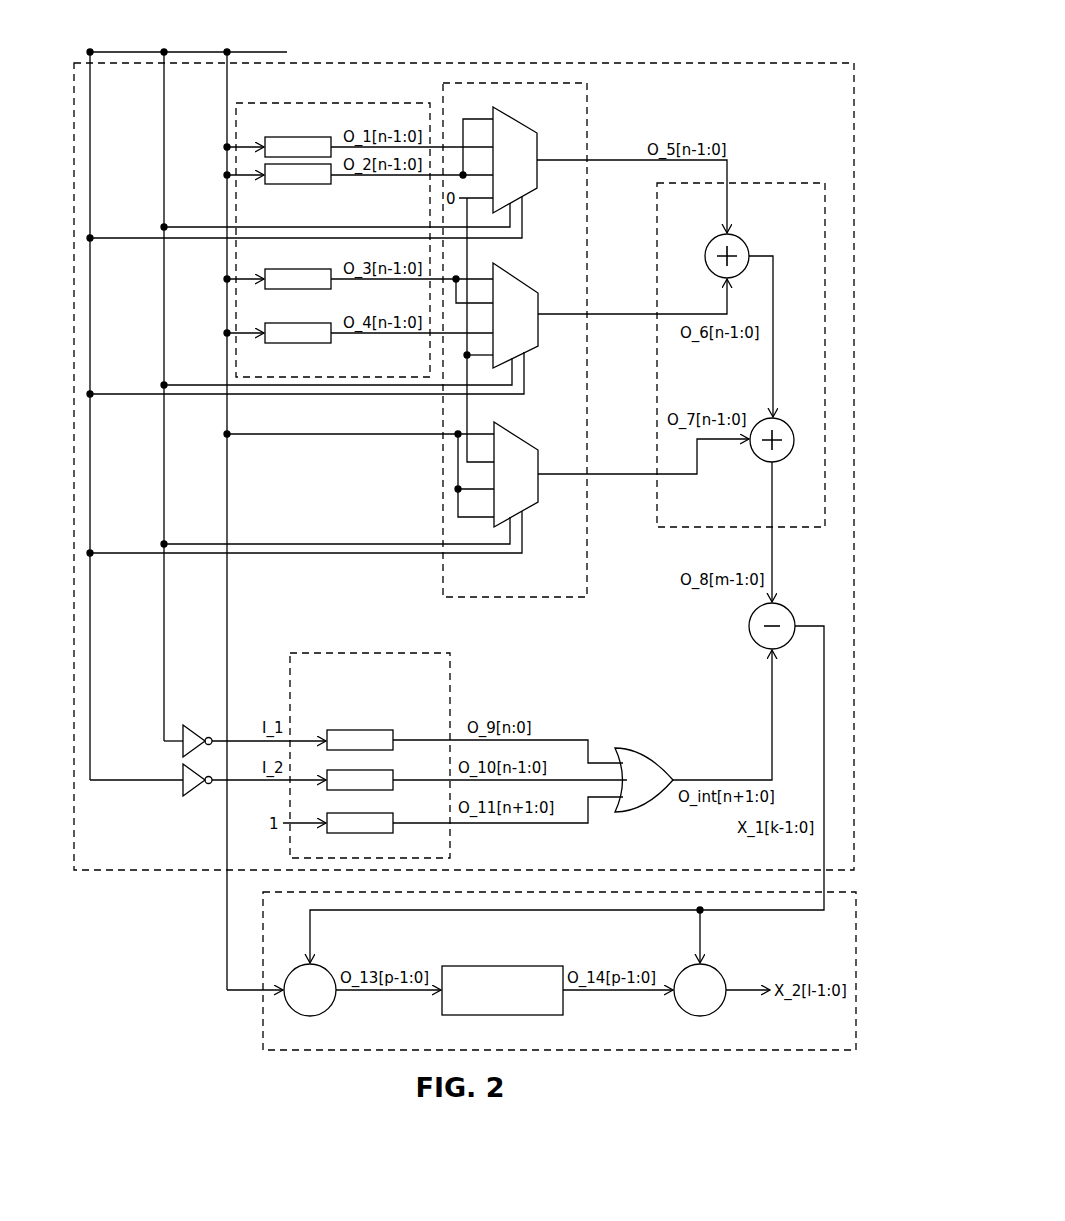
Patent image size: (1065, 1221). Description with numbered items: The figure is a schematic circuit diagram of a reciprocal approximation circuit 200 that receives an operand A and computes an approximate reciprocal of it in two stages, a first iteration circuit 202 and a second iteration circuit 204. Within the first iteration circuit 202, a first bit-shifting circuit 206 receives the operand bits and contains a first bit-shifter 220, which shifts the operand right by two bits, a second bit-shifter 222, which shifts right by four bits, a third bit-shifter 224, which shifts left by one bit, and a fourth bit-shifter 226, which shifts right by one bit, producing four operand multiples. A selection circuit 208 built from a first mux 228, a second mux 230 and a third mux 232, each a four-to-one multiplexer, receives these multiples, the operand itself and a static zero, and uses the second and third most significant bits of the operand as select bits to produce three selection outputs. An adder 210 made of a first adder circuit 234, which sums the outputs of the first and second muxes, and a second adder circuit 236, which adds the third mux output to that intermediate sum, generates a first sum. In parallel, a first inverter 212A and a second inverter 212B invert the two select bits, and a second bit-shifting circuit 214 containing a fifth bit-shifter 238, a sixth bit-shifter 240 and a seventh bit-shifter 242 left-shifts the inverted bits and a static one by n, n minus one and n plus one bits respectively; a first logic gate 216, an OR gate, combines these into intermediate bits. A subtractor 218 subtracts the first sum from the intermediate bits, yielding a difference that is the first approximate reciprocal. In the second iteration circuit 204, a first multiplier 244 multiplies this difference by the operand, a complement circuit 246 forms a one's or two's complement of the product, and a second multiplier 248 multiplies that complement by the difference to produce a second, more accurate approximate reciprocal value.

The reciprocal approximation circuit 200 is at (130, 34).
The first iteration circuit 202 is at (838, 64).
The second iteration circuit 204 is at (255, 1025).
The first bit-shifting circuit 206 is at (322, 104).
The selection circuit 208 is at (590, 142).
The adder 210 is at (754, 182).
The first inverter 212A is at (200, 716).
The second inverter 212B is at (192, 797).
The second bit-shifting circuit 214 is at (453, 701).
The first logic gate 216 is at (662, 758).
The subtractor 218 is at (793, 612).
The first bit-shifter 220 is at (284, 137).
The second bit-shifter 222 is at (290, 184).
The third bit-shifter 224 is at (296, 269).
The fourth bit-shifter 226 is at (294, 323).
The first mux 228 is at (516, 123).
The second mux 230 is at (516, 280).
The third mux 232 is at (518, 439).
The first adder circuit 234 is at (742, 240).
The second adder circuit 236 is at (772, 417).
The fifth bit-shifter 238 is at (370, 730).
The sixth bit-shifter 240 is at (370, 770).
The seventh bit-shifter 242 is at (370, 813).
The first multiplier 244 is at (329, 963).
The complement circuit 246 is at (508, 966).
The second multiplier 248 is at (722, 969).